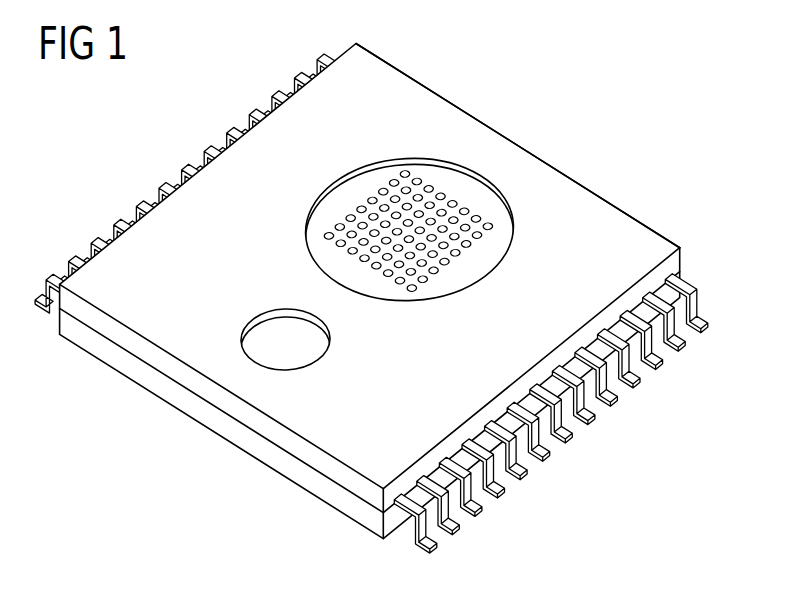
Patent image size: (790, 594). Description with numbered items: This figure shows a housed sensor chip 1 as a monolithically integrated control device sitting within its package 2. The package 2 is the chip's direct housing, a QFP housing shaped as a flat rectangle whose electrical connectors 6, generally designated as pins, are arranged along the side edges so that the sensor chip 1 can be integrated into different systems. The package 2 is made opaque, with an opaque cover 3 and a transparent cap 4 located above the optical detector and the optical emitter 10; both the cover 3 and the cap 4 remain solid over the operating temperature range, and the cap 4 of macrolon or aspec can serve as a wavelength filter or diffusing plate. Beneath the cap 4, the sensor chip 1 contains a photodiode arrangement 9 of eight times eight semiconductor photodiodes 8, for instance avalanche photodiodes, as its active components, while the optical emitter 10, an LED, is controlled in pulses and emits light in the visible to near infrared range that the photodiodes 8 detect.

The sensor chip 1 is at (578, 128).
The package 2 is at (676, 265).
The opaque cover 3 is at (255, 447).
The transparent cap 4 is at (592, 203).
The electrical connectors 6 is at (708, 330).
The photodiodes 8 is at (417, 180).
The photodiode arrangement 9 is at (455, 178).
The optical emitter 10 is at (279, 327).